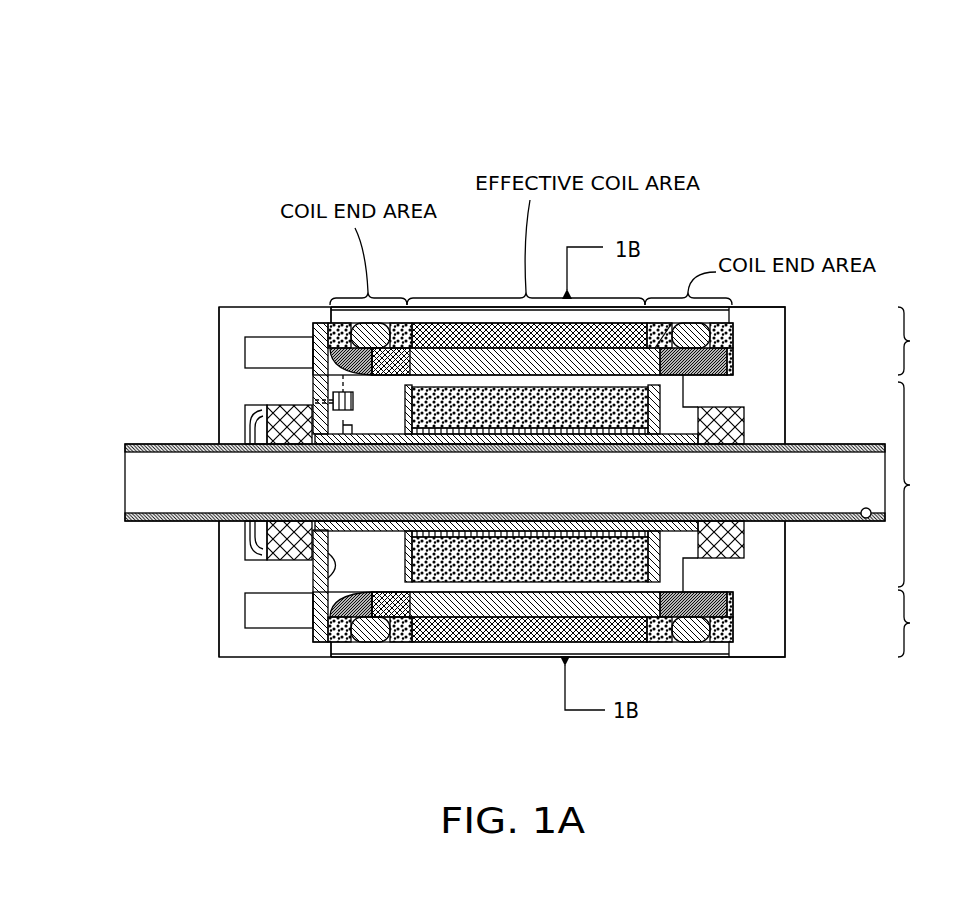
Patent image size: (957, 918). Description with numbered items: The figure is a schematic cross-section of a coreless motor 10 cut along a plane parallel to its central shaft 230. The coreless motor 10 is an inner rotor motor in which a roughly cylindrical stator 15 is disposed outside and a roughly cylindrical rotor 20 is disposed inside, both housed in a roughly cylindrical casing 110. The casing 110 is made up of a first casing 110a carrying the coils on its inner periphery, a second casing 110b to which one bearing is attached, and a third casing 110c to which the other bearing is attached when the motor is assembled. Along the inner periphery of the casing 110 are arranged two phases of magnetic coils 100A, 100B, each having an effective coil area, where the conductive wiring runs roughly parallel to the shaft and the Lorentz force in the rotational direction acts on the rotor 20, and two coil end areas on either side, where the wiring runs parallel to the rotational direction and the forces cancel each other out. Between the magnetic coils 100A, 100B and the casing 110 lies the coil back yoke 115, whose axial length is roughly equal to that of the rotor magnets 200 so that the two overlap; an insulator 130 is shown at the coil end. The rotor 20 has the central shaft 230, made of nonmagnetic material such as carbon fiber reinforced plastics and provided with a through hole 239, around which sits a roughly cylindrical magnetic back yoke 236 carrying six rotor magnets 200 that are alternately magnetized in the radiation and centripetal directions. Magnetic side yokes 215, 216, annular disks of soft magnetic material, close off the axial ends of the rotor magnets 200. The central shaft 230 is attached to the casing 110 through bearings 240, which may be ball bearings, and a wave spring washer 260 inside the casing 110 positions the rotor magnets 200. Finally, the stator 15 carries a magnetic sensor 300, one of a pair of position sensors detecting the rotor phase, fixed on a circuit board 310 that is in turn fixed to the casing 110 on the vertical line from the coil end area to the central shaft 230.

The coreless motor 10 is at (536, 442).
The stator 15 is at (547, 438).
The rotor 20 is at (534, 407).
The magnetic coil 100A is at (727, 603).
The magnetic coil 100B is at (730, 635).
The casing 110 is at (465, 512).
The first casing 110a is at (448, 660).
The second casing 110b is at (255, 660).
The third casing 110c is at (747, 660).
The coil back yoke 115 is at (492, 360).
The coil end insulator 130 is at (655, 330).
The rotor magnets 200 is at (432, 398).
The magnetic side yoke 215 is at (352, 325).
The magnetic side yoke 216 is at (660, 390).
The central shaft 230 is at (852, 444).
The magnetic back yoke 236 is at (333, 402).
The through hole 239 is at (864, 519).
The bearings 240 is at (745, 540).
The wave spring washer 260 is at (245, 430).
The magnetic sensor 300 is at (316, 348).
The circuit board 310 is at (312, 583).